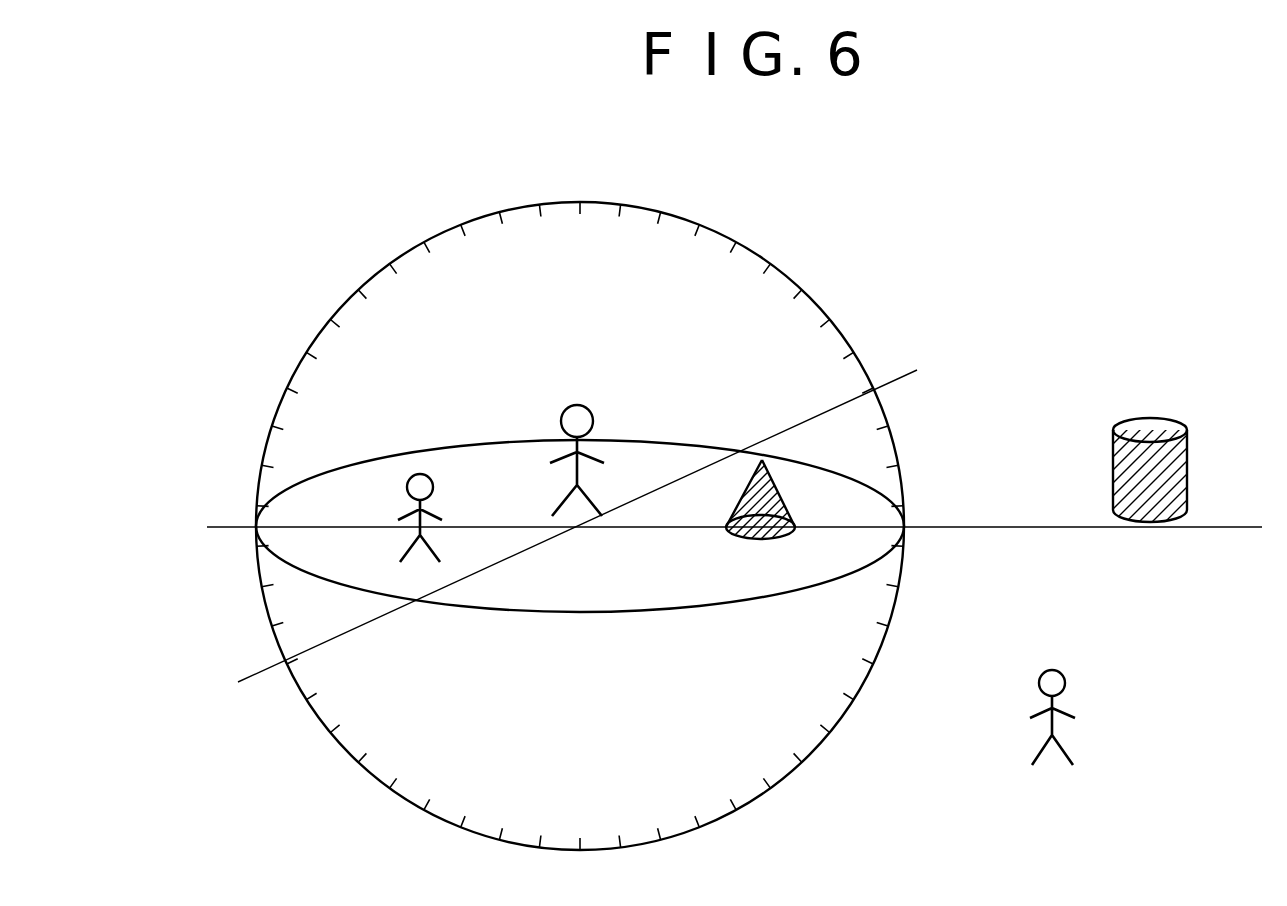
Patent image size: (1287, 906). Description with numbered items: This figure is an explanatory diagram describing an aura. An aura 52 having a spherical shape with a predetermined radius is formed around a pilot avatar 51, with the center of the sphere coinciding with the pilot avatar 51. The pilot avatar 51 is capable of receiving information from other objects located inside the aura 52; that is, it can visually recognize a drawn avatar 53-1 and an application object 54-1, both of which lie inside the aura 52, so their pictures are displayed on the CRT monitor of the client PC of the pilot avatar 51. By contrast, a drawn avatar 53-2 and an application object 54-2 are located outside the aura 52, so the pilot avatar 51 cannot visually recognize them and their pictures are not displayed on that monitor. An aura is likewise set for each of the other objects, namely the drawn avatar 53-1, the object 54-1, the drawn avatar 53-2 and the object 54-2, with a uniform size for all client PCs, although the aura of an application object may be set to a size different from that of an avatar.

The pilot avatar 51 is at (577, 404).
The aura 52 is at (797, 279).
The drawn avatar 53-1 is at (418, 473).
The drawn avatar 53-2 is at (1055, 669).
The application object 54-1 is at (752, 539).
The application object 54-2 is at (1150, 418).